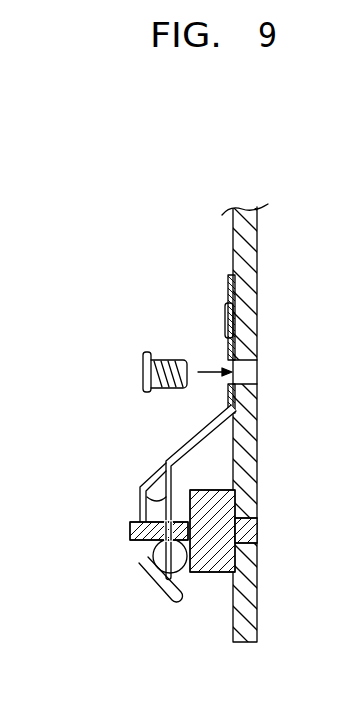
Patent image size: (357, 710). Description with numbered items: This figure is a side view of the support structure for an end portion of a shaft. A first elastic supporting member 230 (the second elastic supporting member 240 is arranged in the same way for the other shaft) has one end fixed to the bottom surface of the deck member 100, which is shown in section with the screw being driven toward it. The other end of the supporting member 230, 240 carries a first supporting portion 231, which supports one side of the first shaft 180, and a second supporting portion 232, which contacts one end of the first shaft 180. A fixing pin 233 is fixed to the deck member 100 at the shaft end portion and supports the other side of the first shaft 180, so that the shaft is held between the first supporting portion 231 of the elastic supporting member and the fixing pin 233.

The deck member 100 is at (228, 253).
The first elastic supporting member 230 is at (142, 486).
The second elastic supporting member 240 is at (188, 432).
The second supporting portion 232 is at (143, 490).
The first supporting portion 231 is at (140, 509).
The first shaft 180 is at (148, 553).
The fixing pin 233 is at (193, 573).